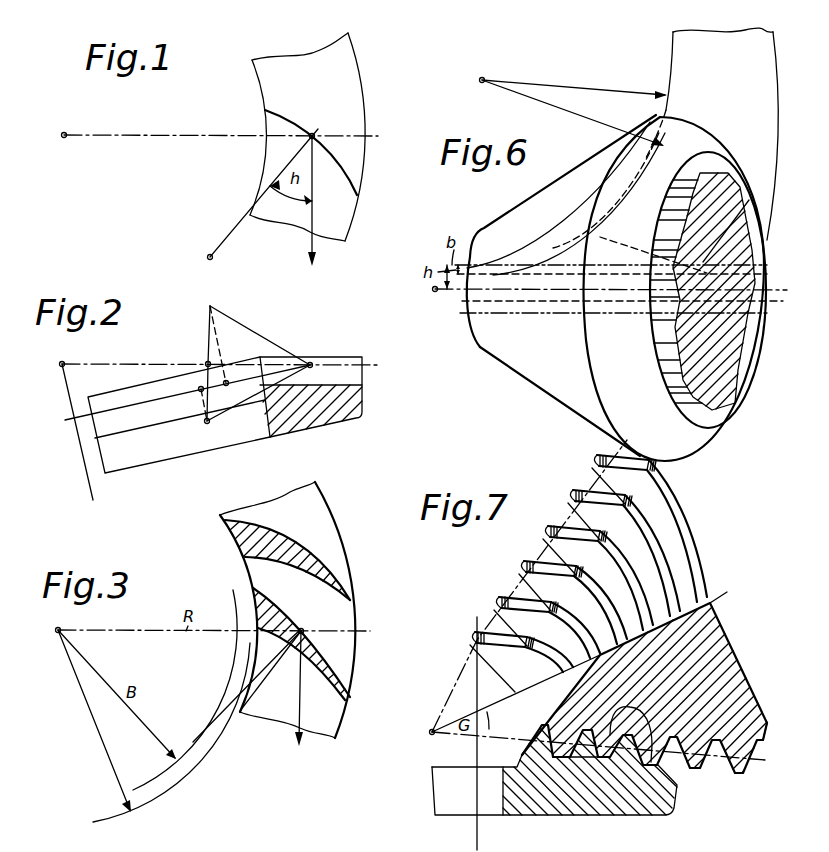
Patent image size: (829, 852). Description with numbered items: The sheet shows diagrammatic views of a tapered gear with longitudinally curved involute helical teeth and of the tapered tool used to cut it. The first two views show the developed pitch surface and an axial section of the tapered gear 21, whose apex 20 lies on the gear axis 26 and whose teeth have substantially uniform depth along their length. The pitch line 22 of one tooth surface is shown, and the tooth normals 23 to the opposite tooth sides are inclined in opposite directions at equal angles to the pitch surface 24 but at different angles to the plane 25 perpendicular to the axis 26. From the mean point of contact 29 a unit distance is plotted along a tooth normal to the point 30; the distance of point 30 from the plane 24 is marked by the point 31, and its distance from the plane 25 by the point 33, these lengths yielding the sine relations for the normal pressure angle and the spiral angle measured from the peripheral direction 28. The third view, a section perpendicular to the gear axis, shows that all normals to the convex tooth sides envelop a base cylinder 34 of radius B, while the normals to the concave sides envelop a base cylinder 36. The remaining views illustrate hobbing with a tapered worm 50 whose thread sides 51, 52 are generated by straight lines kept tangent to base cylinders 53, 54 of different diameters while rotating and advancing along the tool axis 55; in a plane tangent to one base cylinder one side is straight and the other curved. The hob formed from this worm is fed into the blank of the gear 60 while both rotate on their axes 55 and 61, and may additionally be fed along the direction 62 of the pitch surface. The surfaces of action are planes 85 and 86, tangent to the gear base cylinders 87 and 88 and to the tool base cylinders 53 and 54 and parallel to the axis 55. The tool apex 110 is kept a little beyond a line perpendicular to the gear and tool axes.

In FIG. 1, the apex of the tapered gear 20 is at (66, 134).
In FIG. 2, the apex of the tapered gear 20 is at (64, 363).
In FIG. 1, the tapered gear 21 is at (362, 95).
In FIG. 2, the tapered gear 21 is at (325, 421).
In FIG. 1, the pitch line of a tooth surface 22 is at (336, 166).
In FIG. 2, the pitch line of a tooth surface 22 is at (348, 363).
In FIG. 1, the tooth normal 23 is at (250, 208).
In FIG. 2, the tooth normal 23 is at (262, 337).
In FIG. 3, the tooth normal 23 is at (262, 686).
In FIG. 2, the pitch surface 24 is at (220, 355).
In FIG. 2, the plane perpendicular to the gear axis 25 is at (138, 403).
In FIG. 1, the gear axis 26 is at (221, 135).
In FIG. 2, the gear axis 26 is at (82, 455).
In FIG. 3, the gear axis 26 is at (201, 641).
In FIG. 1, the peripheral direction 28 is at (313, 222).
In FIG. 3, the peripheral direction 28 is at (302, 710).
In FIG. 1, the mean point of contact 29 is at (315, 135).
In FIG. 2, the mean point of contact 29 is at (312, 363).
In FIG. 3, the mean point of contact 29 is at (304, 630).
In FIG. 1, the point on tooth normal 30 is at (198, 249).
In FIG. 2, the point on tooth normal 30 is at (199, 435).
In FIG. 2, the point in pitch plane 31 is at (206, 362).
In FIG. 2, the point in plane perpendicular to the axis 33 is at (199, 389).
In FIG. 3, the base cylinder of the convex tooth side 34 is at (226, 690).
In FIG. 3, the base cylinder of the concave tooth side 36 is at (171, 788).
In FIG. 6, the tapered worm 50 is at (550, 383).
In FIG. 7, the tapered worm 50 is at (745, 672).
In FIG. 7, the thread side 51 is at (633, 766).
In FIG. 7, the thread side 52 is at (605, 765).
In FIG. 6, the base cylinder of the tool 53 is at (757, 305).
In FIG. 6, the base cylinder of the tool 54 is at (765, 314).
In FIG. 6, the tool axis 55 is at (783, 292).
In FIG. 7, the tool axis 55 is at (725, 593).
In FIG. 6, the gear 60 is at (771, 92).
In FIG. 7, the gear 60 is at (544, 810).
In FIG. 6, the gear axis 61 is at (484, 79).
In FIG. 7, the gear axis 61 is at (477, 832).
In FIG. 7, the direction of the tool pitch surface 62 is at (760, 740).
In FIG. 6, the plane of action 85 is at (770, 264).
In FIG. 6, the plane of action 86 is at (773, 273).
In FIG. 6, the base cylinder of the gear 87 is at (540, 256).
In FIG. 6, the base cylinder of the gear 88 is at (582, 246).
In FIG. 6, the tool apex 110 is at (602, 305).
In FIG. 7, the tool apex 110 is at (588, 601).